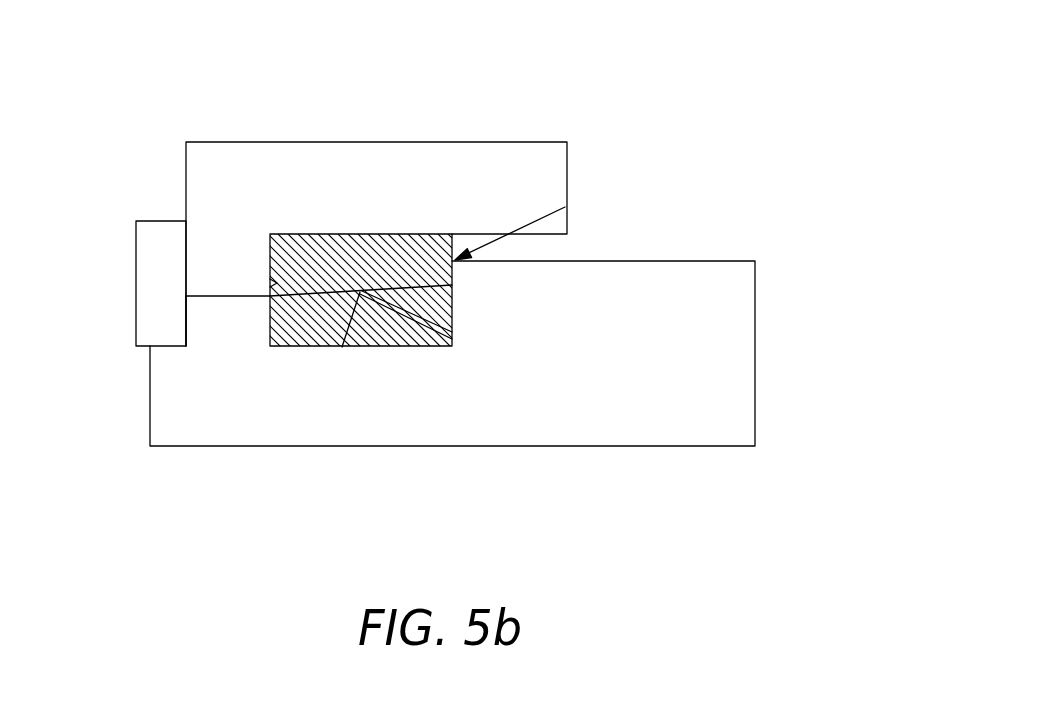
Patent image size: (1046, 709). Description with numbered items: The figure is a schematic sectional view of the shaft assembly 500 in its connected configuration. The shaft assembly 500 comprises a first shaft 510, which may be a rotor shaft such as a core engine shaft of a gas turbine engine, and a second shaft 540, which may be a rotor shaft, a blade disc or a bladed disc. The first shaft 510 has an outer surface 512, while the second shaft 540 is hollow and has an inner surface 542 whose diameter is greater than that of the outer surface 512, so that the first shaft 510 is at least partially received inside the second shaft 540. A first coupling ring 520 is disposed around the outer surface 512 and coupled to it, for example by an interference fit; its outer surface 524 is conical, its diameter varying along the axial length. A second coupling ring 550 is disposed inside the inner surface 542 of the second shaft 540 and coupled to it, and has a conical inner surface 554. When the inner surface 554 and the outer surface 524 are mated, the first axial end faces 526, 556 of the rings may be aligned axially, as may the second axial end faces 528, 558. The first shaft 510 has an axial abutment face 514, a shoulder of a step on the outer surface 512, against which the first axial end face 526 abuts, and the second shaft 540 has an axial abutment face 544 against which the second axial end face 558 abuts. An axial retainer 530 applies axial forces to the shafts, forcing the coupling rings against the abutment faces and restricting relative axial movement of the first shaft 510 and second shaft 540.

The shaft assembly 500 is at (698, 100).
The first shaft 510 is at (756, 359).
The outer surface 512 is at (189, 346).
The axial abutment face 514 is at (452, 292).
The first coupling ring 520 is at (292, 325).
The outer surface 524 is at (390, 293).
The first axial end face 526 is at (452, 318).
The second axial end face 528 is at (269, 320).
The axial retainer 530 is at (160, 221).
The second shaft 540 is at (393, 142).
The inner surface 542 is at (550, 237).
The axial abutment face 544 is at (270, 283).
The second coupling ring 550 is at (303, 257).
The inner surface 554 is at (345, 295).
The first axial end face 556 is at (453, 240).
The second axial end face 558 is at (269, 238).